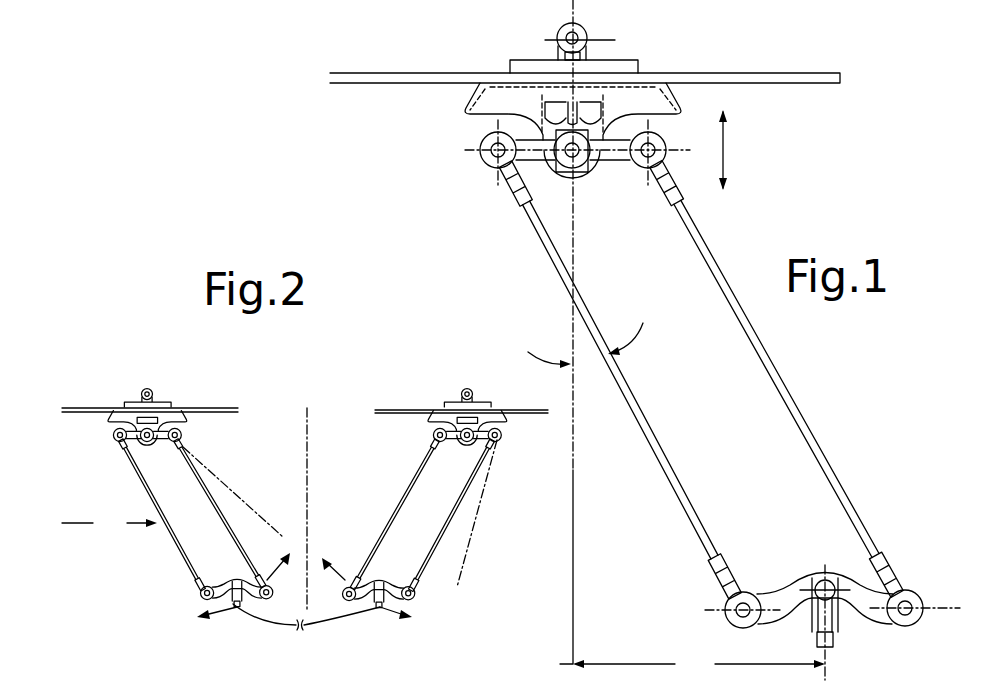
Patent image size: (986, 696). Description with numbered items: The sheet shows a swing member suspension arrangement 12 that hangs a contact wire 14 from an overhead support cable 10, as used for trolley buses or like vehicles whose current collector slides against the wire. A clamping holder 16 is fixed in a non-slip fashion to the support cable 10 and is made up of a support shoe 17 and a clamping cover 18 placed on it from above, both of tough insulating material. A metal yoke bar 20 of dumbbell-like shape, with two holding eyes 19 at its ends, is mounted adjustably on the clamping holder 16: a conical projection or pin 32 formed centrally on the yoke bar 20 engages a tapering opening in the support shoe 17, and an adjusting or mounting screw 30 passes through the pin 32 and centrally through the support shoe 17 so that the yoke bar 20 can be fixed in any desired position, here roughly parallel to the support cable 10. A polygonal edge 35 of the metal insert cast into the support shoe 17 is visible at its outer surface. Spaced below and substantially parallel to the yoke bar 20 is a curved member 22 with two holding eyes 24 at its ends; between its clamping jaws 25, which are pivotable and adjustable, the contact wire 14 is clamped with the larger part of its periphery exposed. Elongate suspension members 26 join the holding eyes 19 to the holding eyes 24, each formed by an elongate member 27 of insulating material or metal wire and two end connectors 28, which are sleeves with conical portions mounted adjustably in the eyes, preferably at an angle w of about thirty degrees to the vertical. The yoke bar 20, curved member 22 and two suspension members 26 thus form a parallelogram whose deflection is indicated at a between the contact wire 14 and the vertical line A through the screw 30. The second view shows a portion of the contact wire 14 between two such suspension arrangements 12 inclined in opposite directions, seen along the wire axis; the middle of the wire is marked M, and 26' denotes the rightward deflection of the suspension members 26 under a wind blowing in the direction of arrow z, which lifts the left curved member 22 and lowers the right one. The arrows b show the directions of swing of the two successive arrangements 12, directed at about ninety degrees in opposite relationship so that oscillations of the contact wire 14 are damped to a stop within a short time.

In FIG. 1, the support cable 10 is at (838, 88).
In FIG. 2, the support cable 10 is at (237, 408).
In FIG. 1, the swing member suspension arrangement 12 is at (806, 374).
In FIG. 2, the swing member suspension arrangement 12 is at (228, 494).
In FIG. 1, the contact wire 14 is at (832, 648).
In FIG. 2, the contact wire 14 is at (362, 620).
In FIG. 1, the clamping holder 16 is at (494, 102).
In FIG. 2, the clamping holder 16 is at (107, 406).
In FIG. 1, the support shoe 17 is at (668, 105).
In FIG. 1, the clamping cover 18 is at (620, 68).
In FIG. 1, the holding eyes 19 is at (664, 150).
In FIG. 1, the yoke bar 20 is at (615, 165).
In FIG. 1, the curved member 22 is at (790, 585).
In FIG. 2, the curved member 22 is at (452, 625).
In FIG. 1, the holding eyes 24 is at (900, 625).
In FIG. 1, the clamping jaws 25 is at (812, 630).
In FIG. 1, the elongate suspension members 26 is at (633, 380).
In FIG. 2, the elongate suspension members 26 is at (307, 515).
In FIG. 2, the deflection of the elongate suspension members 26' is at (362, 513).
In FIG. 1, the elongate member 27 is at (682, 467).
In FIG. 1, the end connectors 28 is at (880, 565).
In FIG. 1, the adjusting or mounting screw 30 is at (560, 168).
In FIG. 1, the conical projection or pin 32 is at (588, 170).
In FIG. 1, the polygonal edge 35 is at (578, 324).
In FIG. 1, the angle w is at (562, 364).
In FIG. 1, the degree of deflection a is at (699, 664).
In FIG. 1, the vertical line A is at (589, 332).
In FIG. 2, the middle of the contact wire M is at (310, 518).
In FIG. 2, the arrows b is at (304, 580).
In FIG. 2, the arrow z is at (109, 523).